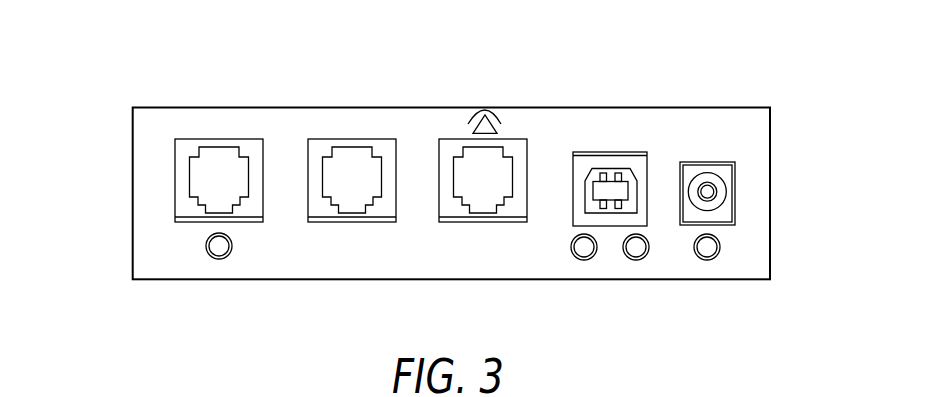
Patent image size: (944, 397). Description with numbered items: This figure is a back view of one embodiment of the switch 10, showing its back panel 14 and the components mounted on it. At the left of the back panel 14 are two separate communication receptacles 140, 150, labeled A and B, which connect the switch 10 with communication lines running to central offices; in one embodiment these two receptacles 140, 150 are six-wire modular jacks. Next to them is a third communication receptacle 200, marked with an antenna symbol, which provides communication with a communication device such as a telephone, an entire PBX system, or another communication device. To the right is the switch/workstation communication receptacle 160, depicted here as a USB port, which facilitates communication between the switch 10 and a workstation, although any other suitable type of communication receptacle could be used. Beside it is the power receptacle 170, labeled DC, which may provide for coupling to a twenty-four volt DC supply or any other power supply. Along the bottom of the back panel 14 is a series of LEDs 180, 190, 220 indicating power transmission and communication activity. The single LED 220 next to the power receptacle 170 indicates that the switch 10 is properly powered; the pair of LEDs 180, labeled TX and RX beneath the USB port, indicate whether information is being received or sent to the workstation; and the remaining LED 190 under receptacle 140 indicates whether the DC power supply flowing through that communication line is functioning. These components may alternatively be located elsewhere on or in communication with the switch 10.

The switch 10 is at (735, 108).
The back panel 14 is at (153, 240).
The communication receptacle 140 is at (190, 147).
The communication receptacle 150 is at (324, 147).
The third communication receptacle 200 is at (455, 147).
The switch/workstation communication receptacle 160 is at (637, 161).
The power receptacle 170 is at (727, 210).
The pair of LEDs 180 is at (663, 283).
The LED 190 is at (218, 279).
The LED 220 is at (708, 280).